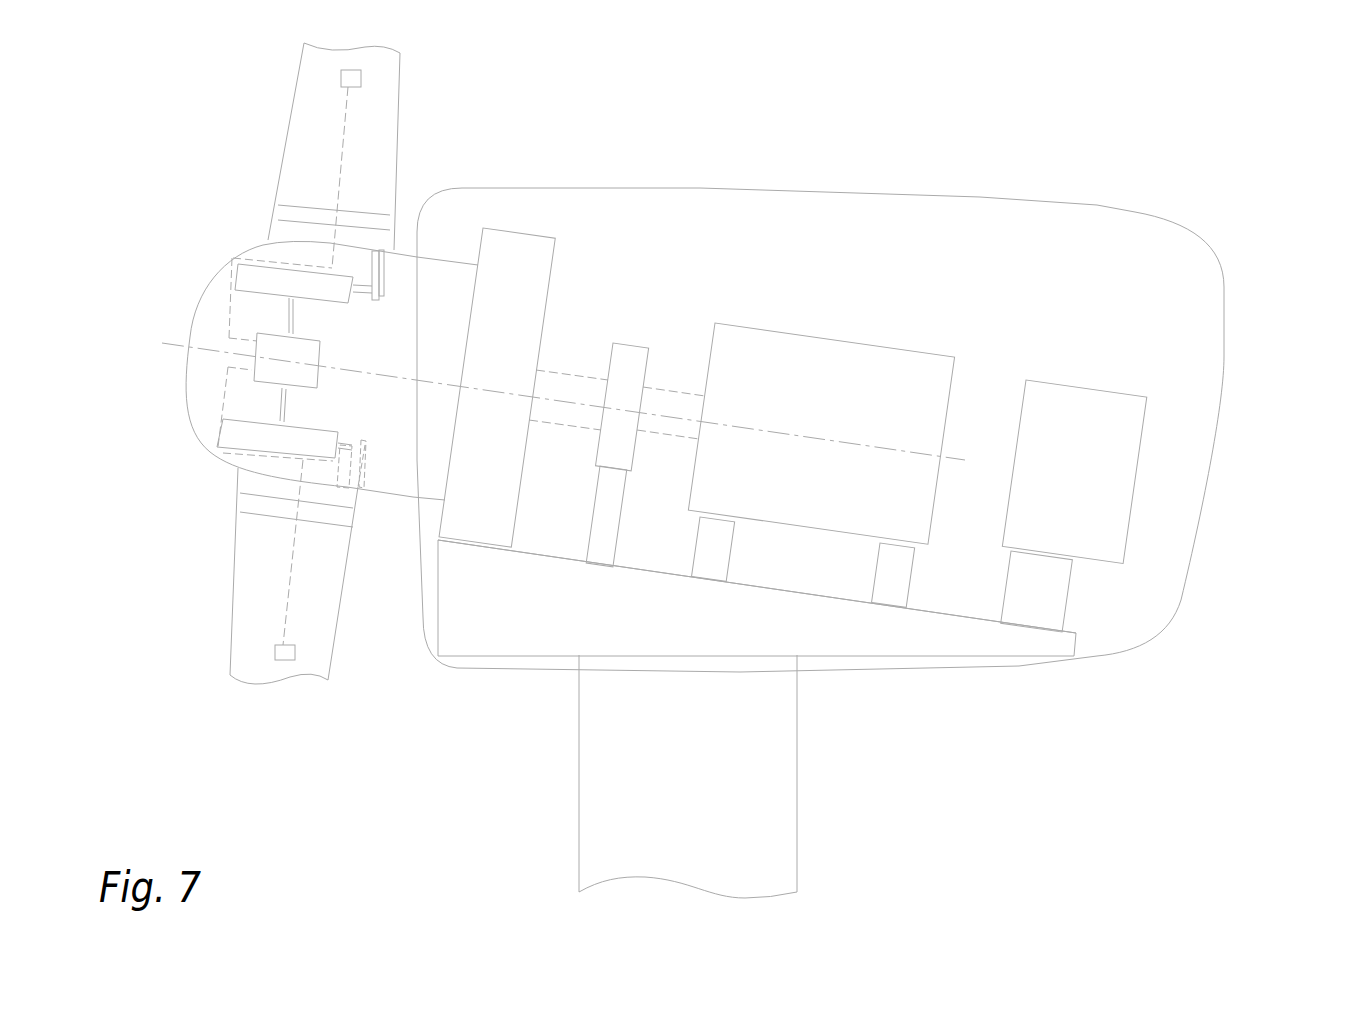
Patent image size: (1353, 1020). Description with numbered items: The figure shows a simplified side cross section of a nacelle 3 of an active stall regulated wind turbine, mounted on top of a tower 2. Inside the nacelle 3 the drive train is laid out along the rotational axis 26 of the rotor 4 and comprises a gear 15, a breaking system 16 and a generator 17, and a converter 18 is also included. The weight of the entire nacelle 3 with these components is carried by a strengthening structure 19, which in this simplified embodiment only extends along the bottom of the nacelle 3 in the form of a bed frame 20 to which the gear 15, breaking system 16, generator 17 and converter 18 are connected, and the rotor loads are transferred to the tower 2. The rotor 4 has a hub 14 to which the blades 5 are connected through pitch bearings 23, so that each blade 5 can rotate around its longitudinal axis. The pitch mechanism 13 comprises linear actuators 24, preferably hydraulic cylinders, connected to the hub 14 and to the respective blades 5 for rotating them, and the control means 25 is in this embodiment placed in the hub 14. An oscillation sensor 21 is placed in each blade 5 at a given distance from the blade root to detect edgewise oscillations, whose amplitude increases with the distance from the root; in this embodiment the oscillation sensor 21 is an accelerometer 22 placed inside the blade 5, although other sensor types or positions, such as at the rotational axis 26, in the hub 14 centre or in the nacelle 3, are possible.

The tower 2 is at (766, 852).
The nacelle 3 is at (1263, 222).
The rotor 4 is at (275, 257).
The blade 5 is at (363, 137).
The pitch mechanism 13 is at (345, 445).
The hub 14 is at (202, 410).
The gear 15 is at (515, 267).
The breaking system 16 is at (632, 368).
The generator 17 is at (785, 382).
The converter 18 is at (1095, 436).
The strengthening structure 19 is at (892, 628).
The bed frame 20 is at (850, 643).
The oscillation sensor 21 is at (295, 652).
The accelerometer 22 is at (283, 660).
The pitch bearing 23 is at (267, 507).
The linear actuator 24 is at (250, 278).
The control means 25 is at (263, 363).
The rotational axis 26 is at (178, 343).